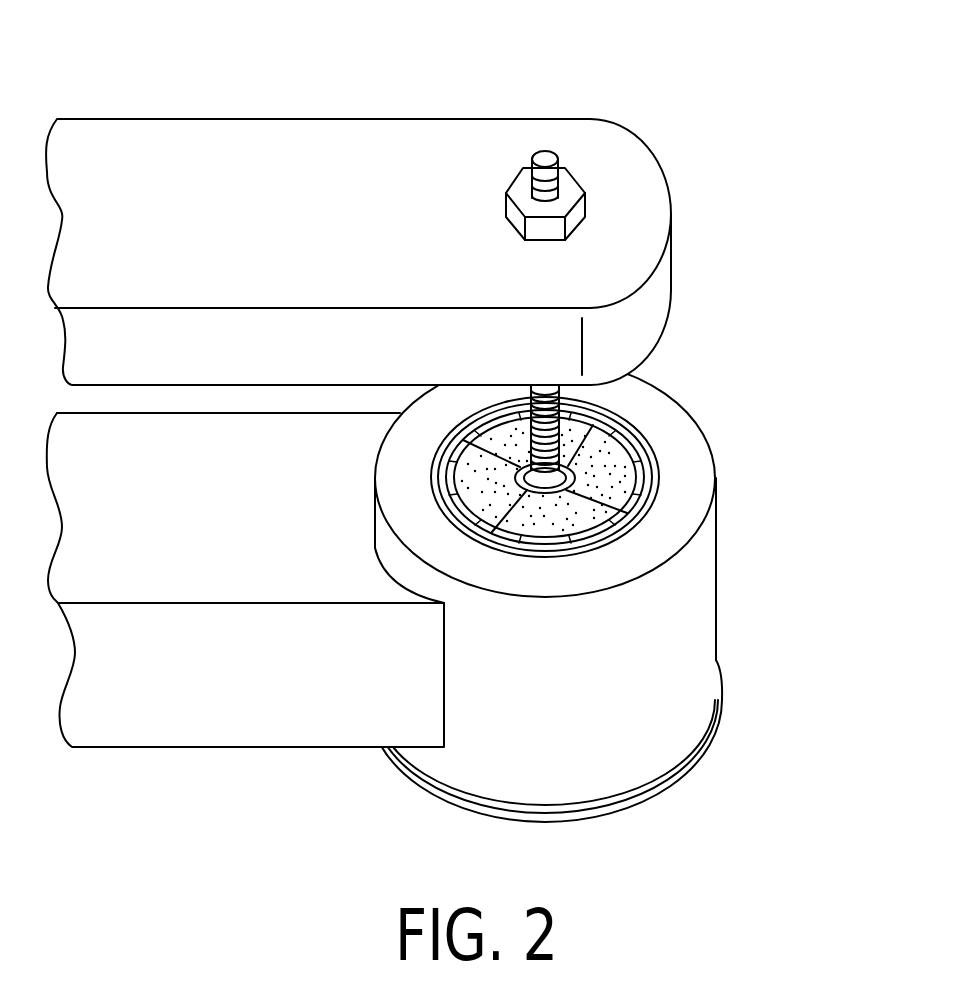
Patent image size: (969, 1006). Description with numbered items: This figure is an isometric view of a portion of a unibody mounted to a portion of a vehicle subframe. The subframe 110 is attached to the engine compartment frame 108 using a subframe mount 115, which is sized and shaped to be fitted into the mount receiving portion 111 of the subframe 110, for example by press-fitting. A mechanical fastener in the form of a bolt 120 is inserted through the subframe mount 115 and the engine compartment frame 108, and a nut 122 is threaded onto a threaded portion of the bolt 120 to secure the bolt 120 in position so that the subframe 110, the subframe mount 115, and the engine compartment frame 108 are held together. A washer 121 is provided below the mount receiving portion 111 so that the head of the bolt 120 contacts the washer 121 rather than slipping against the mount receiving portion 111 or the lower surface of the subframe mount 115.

The engine compartment frame 108 is at (240, 142).
The subframe 110 is at (172, 727).
The mount receiving portion 111 is at (698, 605).
The subframe mount 115 is at (615, 445).
The bolt 120 is at (543, 157).
The washer 121 is at (690, 763).
The nut 122 is at (580, 208).